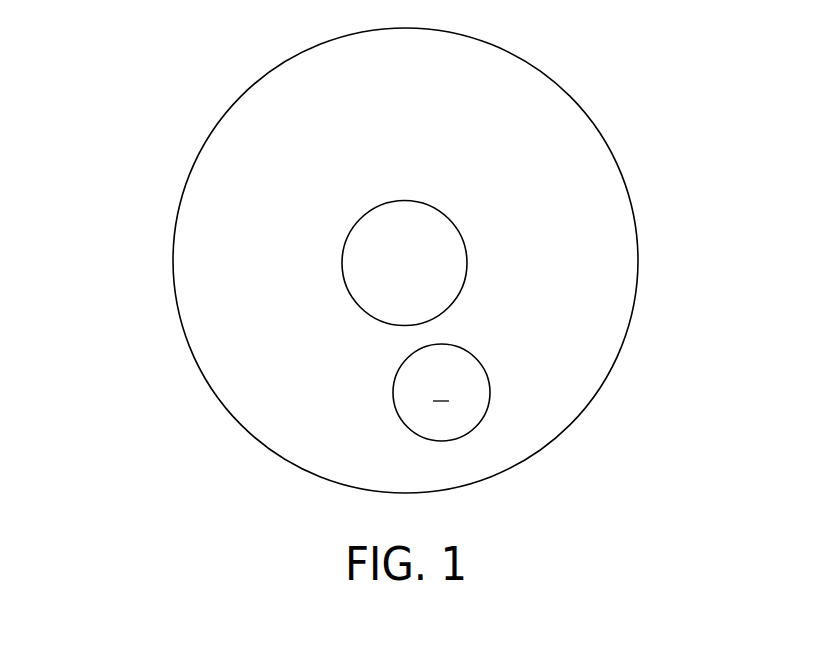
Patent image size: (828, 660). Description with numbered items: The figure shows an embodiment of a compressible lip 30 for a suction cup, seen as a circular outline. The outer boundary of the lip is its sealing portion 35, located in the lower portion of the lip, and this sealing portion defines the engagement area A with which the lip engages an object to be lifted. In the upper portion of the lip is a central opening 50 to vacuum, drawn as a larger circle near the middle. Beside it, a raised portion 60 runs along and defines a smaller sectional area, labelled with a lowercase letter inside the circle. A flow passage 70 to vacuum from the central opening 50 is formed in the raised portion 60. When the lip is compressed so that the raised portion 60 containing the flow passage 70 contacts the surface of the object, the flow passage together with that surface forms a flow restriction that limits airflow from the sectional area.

The compressible lip 30 is at (131, 151).
The sealing portion 35 is at (588, 118).
The engagement area A is at (592, 250).
The central opening for vacuum 50 is at (356, 230).
The raised portion 60 is at (396, 418).
The flow passage 70 is at (429, 339).